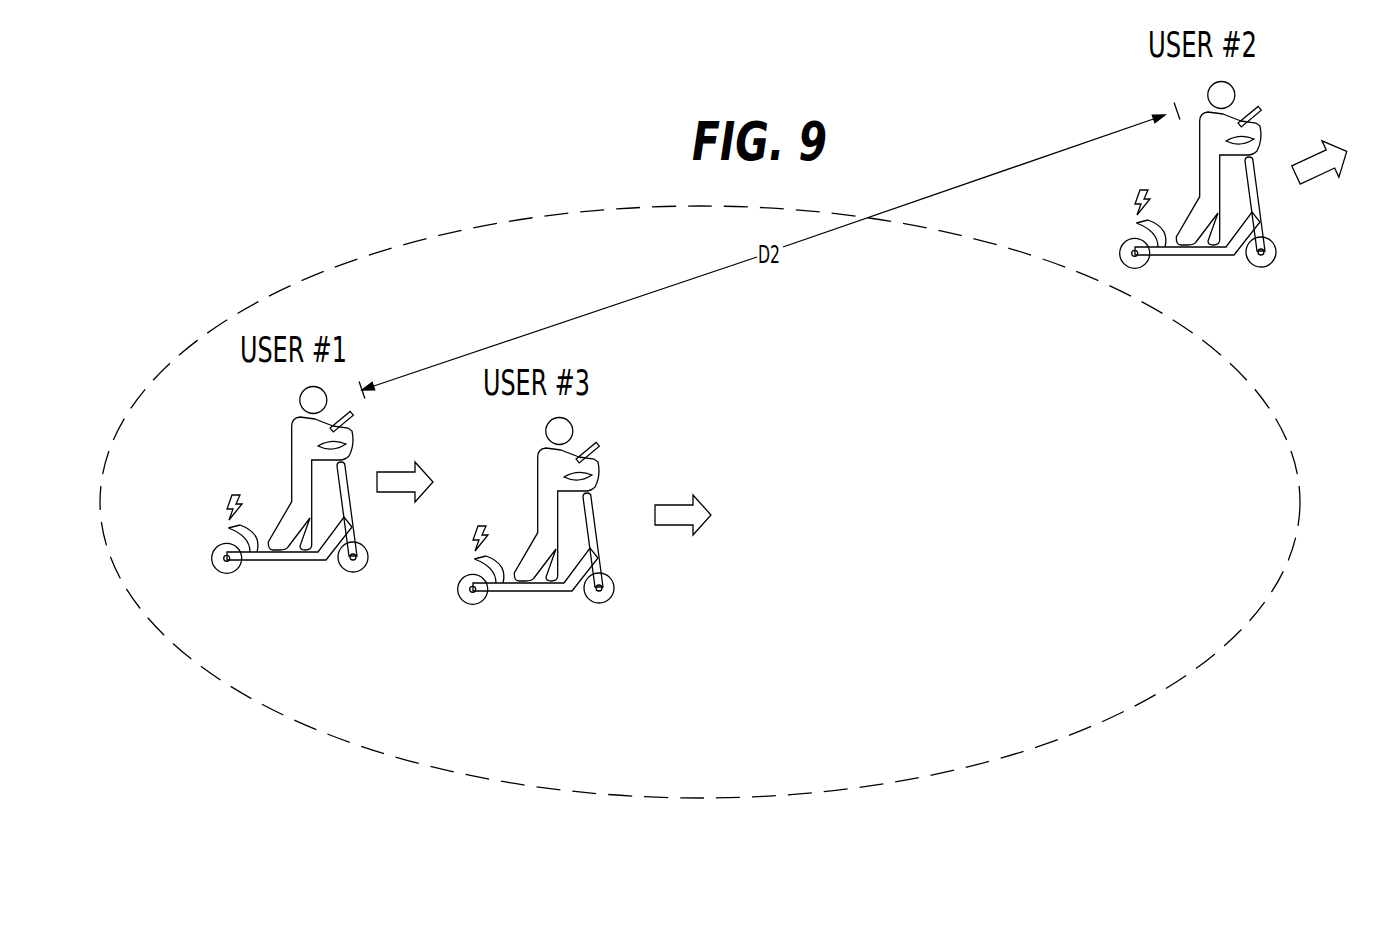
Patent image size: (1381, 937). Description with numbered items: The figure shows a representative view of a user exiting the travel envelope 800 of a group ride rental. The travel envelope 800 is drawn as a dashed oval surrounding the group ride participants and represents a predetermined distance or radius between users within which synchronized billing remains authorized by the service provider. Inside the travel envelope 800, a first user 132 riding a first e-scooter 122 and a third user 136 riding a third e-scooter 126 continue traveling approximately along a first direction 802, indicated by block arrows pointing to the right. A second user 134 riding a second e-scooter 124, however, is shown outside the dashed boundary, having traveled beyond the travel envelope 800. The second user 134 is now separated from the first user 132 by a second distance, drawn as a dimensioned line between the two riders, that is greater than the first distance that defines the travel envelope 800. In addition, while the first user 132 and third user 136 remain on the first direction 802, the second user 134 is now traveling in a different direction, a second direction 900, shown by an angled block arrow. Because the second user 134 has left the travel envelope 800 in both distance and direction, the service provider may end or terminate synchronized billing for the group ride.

The travel envelope 800 is at (483, 224).
The first direction 802 is at (397, 492).
The second direction 900 is at (1315, 178).
The first e-scooter 122 is at (272, 561).
The second e-scooter 124 is at (1193, 256).
The third e-scooter 126 is at (518, 592).
The first user 132 is at (292, 438).
The second user 134 is at (1200, 172).
The third user 136 is at (538, 469).